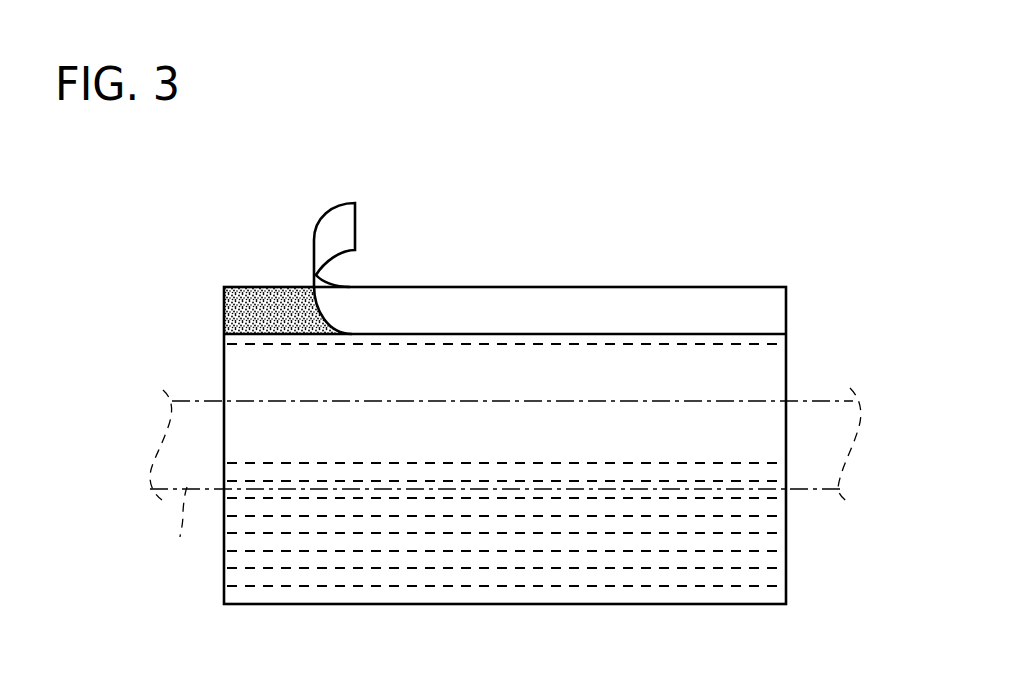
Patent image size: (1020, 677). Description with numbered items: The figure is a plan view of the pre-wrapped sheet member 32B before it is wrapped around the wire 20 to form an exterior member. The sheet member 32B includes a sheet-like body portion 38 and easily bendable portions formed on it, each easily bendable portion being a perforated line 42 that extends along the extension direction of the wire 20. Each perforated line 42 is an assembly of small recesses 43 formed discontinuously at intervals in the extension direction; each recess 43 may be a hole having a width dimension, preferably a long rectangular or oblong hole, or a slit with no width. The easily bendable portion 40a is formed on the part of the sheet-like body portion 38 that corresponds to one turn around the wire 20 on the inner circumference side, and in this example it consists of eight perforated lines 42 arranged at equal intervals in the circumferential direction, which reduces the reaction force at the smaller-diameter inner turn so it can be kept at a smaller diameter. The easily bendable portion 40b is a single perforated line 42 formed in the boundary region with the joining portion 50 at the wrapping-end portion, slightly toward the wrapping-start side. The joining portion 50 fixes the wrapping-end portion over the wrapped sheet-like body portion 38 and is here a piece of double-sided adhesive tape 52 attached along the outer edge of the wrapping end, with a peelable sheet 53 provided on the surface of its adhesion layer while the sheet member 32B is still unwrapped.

The pre-wrapped sheet member 32B is at (446, 199).
The double-sided adhesive tape 52 is at (288, 271).
The joining portion 50 is at (249, 286).
The peelable sheet 53 is at (350, 228).
The sheet-like body portion 38 is at (243, 374).
The perforated line 42 is at (566, 466).
The easily bendable portion 40b is at (750, 345).
The easily bendable portion 40a is at (770, 551).
The recess 43 is at (410, 587).
The wire 20 is at (505, 481).